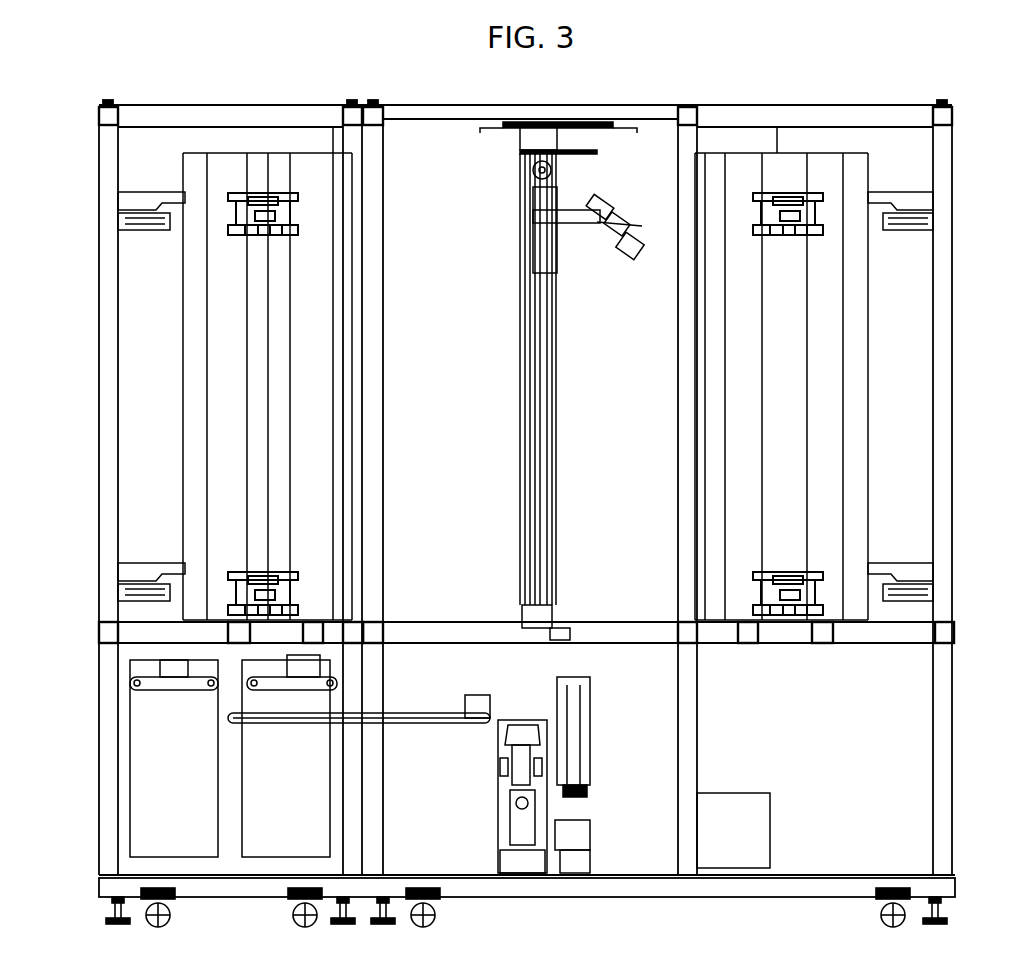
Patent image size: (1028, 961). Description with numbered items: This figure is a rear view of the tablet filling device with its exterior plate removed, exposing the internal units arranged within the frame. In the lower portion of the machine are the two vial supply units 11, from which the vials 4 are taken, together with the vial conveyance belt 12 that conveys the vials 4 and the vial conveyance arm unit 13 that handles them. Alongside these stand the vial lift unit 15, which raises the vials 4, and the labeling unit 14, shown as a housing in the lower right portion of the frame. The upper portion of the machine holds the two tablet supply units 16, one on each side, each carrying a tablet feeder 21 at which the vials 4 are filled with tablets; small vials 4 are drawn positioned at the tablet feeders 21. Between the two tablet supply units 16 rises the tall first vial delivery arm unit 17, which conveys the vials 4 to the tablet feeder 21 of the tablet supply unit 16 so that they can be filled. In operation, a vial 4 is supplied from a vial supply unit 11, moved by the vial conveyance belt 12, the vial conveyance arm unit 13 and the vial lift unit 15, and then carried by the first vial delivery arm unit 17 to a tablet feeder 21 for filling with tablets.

The tablet supply unit 16 is at (152, 150).
The tablet feeder 21 is at (237, 237).
The first vial delivery arm unit 17 is at (572, 292).
The vial 4 is at (610, 258).
The vial supply unit 11 is at (126, 773).
The vial conveyance belt 12 is at (401, 737).
The vial conveyance arm unit 13 is at (488, 828).
The vial lift unit 15 is at (592, 727).
The labeling unit 14 is at (730, 790).